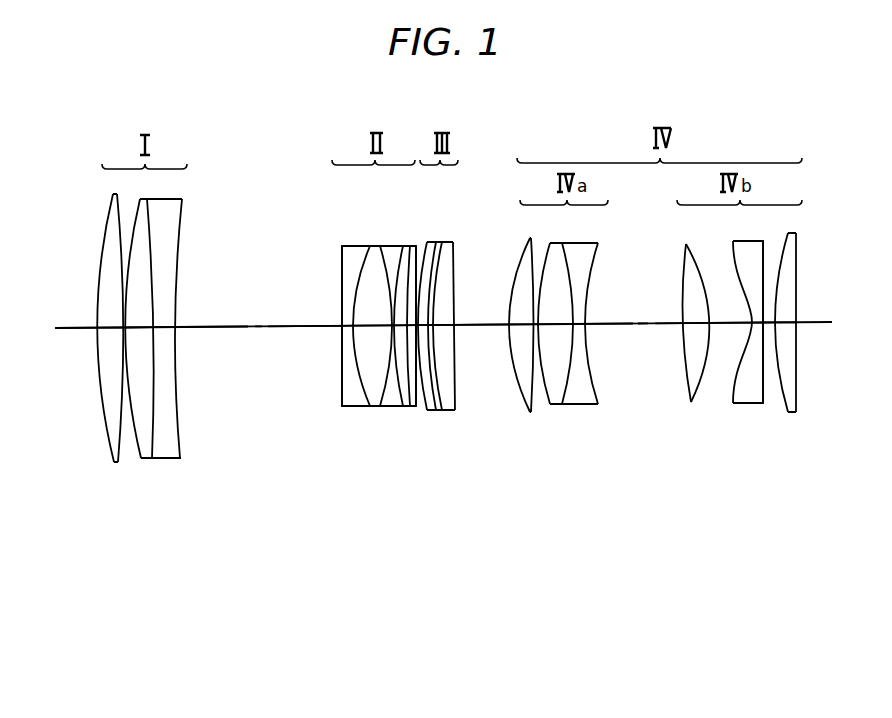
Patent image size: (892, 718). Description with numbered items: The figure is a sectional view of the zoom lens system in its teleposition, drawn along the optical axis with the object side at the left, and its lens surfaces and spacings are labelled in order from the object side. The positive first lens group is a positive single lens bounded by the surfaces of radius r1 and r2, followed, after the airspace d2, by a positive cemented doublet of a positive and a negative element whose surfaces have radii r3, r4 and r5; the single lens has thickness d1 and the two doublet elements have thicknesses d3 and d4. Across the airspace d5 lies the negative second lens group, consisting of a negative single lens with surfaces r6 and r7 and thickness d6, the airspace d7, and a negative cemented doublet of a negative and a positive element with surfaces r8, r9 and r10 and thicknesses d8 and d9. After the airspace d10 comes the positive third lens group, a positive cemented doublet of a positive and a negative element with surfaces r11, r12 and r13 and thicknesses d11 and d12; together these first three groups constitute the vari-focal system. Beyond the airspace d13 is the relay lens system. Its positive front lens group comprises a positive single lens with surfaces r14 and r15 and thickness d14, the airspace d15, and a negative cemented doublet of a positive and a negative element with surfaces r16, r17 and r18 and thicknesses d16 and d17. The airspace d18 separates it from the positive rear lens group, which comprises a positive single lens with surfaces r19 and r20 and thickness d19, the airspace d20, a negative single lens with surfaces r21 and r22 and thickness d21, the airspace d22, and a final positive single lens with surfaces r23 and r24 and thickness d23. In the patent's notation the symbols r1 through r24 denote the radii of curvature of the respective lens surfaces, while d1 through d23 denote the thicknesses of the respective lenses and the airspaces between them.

The radius of curvature of lens surface r1 is at (113, 450).
The radius of curvature of lens surface r2 is at (124, 466).
The radius of curvature of lens surface r3 is at (150, 452).
The radius of curvature of lens surface r4 is at (158, 460).
The radius of curvature of lens surface r5 is at (180, 452).
The radius of curvature of lens surface r6 is at (342, 402).
The radius of curvature of lens surface r7 is at (363, 400).
The radius of curvature of lens surface r8 is at (388, 402).
The radius of curvature of lens surface r9 is at (405, 400).
The radius of curvature of lens surface r10 is at (424, 401).
The radius of curvature of lens surface r11 is at (423, 401).
The radius of curvature of lens surface r12 is at (440, 400).
The radius of curvature of lens surface r13 is at (455, 401).
The radius of curvature of lens surface r14 is at (522, 402).
The radius of curvature of lens surface r15 is at (535, 413).
The radius of curvature of lens surface r16 is at (560, 402).
The radius of curvature of lens surface r17 is at (556, 404).
The radius of curvature of lens surface r18 is at (599, 398).
The radius of curvature of lens surface r19 is at (684, 400).
The radius of curvature of lens surface r20 is at (696, 398).
The radius of curvature of lens surface r21 is at (735, 400).
The radius of curvature of lens surface r22 is at (762, 396).
The radius of curvature of lens surface r23 is at (789, 402).
The radius of curvature of lens surface r24 is at (797, 398).
The lens thickness d1 is at (107, 327).
The airspace d2 is at (121, 320).
The lens thickness d3 is at (143, 322).
The lens thickness d4 is at (165, 327).
The airspace d5 is at (233, 326).
The lens thickness d6 is at (344, 325).
The airspace d7 is at (367, 324).
The lens thickness d8 is at (381, 246).
The lens thickness d9 is at (407, 246).
The airspace d10 is at (416, 330).
The lens thickness d11 is at (440, 242).
The lens thickness d12 is at (438, 320).
The airspace d13 is at (487, 320).
The lens thickness d14 is at (519, 303).
The airspace d15 is at (535, 326).
The lens thickness d16 is at (555, 320).
The lens thickness d17 is at (580, 323).
The airspace d18 is at (622, 327).
The lens thickness d19 is at (693, 320).
The airspace d20 is at (726, 322).
The lens thickness d21 is at (755, 320).
The airspace d22 is at (775, 318).
The lens thickness d23 is at (785, 328).